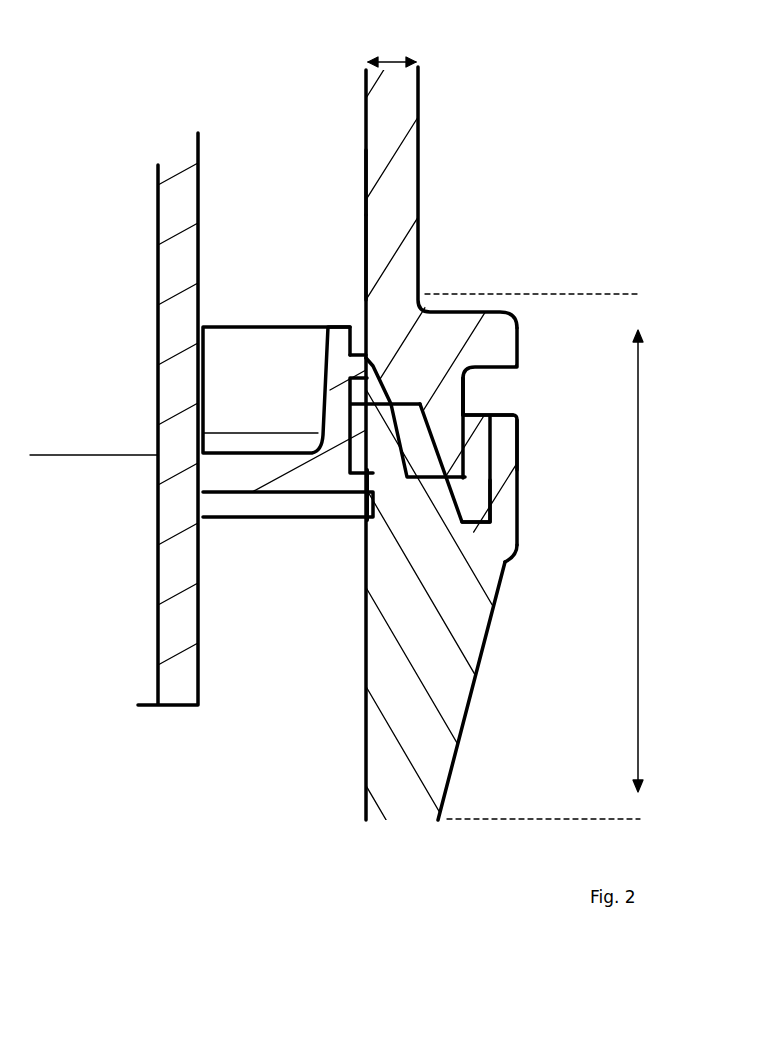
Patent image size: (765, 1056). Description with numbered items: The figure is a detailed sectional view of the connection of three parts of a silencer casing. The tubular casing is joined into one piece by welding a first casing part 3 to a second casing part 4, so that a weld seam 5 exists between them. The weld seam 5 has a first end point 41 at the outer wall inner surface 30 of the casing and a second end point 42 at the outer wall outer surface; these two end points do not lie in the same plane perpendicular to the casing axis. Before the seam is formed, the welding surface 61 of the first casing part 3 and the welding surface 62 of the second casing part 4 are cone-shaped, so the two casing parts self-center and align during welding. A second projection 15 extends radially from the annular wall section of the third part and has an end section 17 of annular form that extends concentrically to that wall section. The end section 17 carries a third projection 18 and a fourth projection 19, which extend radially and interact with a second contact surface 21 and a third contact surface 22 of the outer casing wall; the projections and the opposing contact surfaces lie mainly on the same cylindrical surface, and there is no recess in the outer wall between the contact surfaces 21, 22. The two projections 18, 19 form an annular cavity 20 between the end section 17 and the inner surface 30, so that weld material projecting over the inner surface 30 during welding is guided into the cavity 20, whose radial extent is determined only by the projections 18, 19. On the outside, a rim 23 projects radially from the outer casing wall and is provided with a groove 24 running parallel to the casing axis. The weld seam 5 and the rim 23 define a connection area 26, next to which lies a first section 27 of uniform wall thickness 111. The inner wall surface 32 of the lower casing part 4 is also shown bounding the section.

The uniform wall thickness 111 is at (392, 47).
The first casing part 3 is at (383, 104).
The first section of uniform wall thickness 27 is at (388, 180).
The outer wall inner surface 30 is at (362, 228).
The end section 17 is at (330, 337).
The third projection 18 is at (345, 352).
The second contact surface 21 is at (372, 352).
The second end point 42 is at (412, 335).
The weld seam 5 is at (522, 348).
The welding surface of the first casing part 61 is at (500, 385).
The welding surface of the second casing part 62 is at (508, 408).
The rim 23 is at (520, 447).
The first end point 41 is at (467, 514).
The groove 24 is at (520, 560).
The connection area 26 is at (544, 556).
The second casing part 4 is at (453, 757).
The inner wall surface 32 is at (367, 753).
The second projection 15 is at (315, 473).
The fourth projection 19 is at (358, 478).
The annular cavity 20 is at (368, 470).
The third contact surface 22 is at (372, 535).